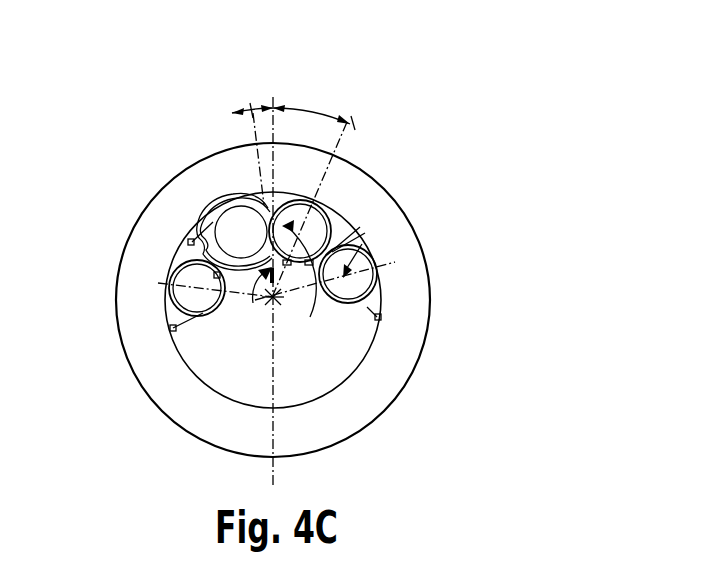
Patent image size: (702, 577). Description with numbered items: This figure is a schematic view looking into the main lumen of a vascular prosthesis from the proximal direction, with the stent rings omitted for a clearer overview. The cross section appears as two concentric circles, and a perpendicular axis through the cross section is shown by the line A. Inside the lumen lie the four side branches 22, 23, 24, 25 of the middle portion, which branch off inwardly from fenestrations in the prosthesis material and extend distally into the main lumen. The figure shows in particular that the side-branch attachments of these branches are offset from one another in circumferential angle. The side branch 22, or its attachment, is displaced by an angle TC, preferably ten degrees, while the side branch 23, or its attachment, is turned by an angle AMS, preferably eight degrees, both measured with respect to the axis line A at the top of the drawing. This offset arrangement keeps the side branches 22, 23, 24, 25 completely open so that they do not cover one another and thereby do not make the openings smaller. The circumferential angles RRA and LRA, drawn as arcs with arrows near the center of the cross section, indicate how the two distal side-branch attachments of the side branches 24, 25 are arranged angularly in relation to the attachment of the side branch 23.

The side branch 22 is at (318, 222).
The side branch 23 is at (233, 222).
The side branch 24 is at (355, 258).
The side branch 25 is at (193, 272).
The perpendicular axis A is at (275, 477).
The angle AMS is at (261, 110).
The angle TC is at (312, 112).
The circumferential angle LRA is at (310, 317).
The circumferential angle RRA is at (257, 302).